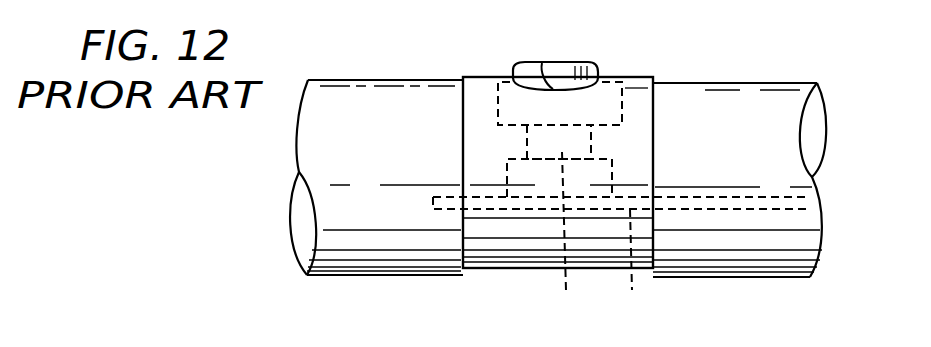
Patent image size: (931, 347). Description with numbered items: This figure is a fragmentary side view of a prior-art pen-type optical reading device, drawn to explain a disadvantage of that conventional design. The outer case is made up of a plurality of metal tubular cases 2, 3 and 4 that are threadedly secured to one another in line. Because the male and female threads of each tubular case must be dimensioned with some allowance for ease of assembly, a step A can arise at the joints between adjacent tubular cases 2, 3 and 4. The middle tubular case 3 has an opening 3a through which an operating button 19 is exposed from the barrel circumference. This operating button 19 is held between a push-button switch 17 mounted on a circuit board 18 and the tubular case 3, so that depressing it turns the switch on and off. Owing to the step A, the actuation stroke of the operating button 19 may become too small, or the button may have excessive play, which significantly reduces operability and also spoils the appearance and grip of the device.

The tubular case 2 is at (374, 95).
The tubular case 3 is at (483, 80).
The opening 3a is at (555, 63).
The operating button 19 is at (590, 62).
The tubular case 4 is at (750, 90).
The push-button switch 17 is at (560, 199).
The circuit board 18 is at (621, 258).
The step A is at (660, 78).